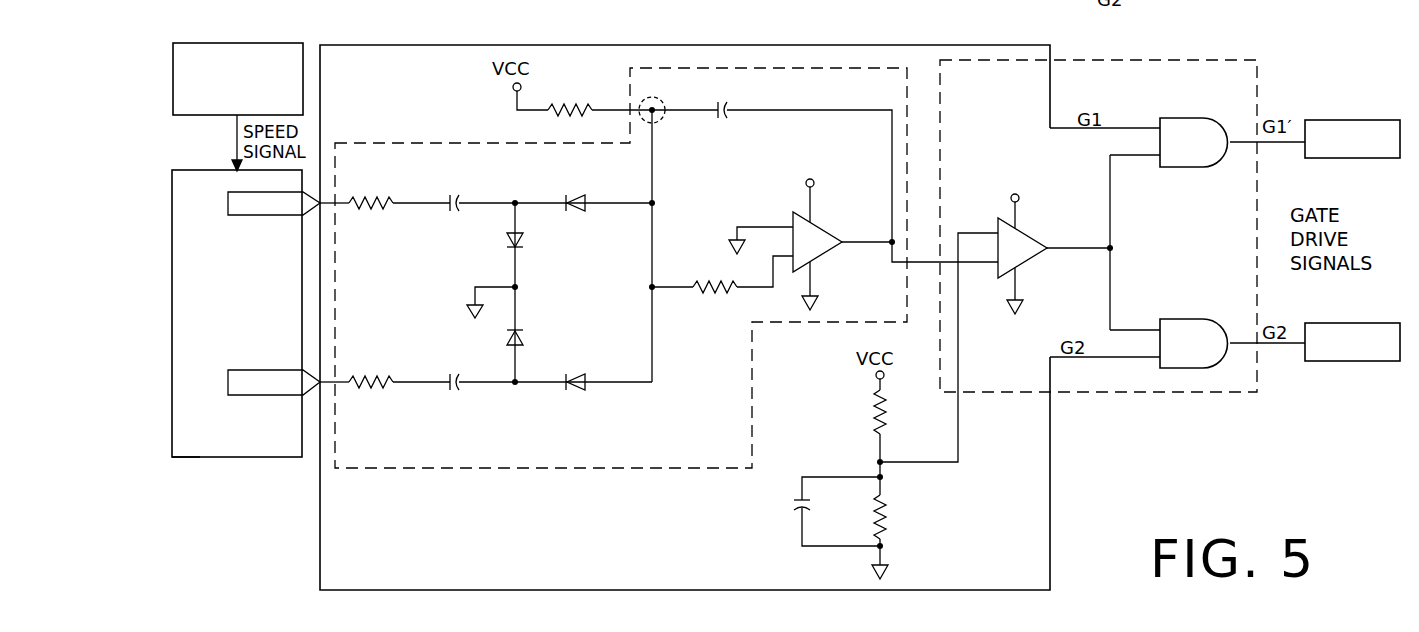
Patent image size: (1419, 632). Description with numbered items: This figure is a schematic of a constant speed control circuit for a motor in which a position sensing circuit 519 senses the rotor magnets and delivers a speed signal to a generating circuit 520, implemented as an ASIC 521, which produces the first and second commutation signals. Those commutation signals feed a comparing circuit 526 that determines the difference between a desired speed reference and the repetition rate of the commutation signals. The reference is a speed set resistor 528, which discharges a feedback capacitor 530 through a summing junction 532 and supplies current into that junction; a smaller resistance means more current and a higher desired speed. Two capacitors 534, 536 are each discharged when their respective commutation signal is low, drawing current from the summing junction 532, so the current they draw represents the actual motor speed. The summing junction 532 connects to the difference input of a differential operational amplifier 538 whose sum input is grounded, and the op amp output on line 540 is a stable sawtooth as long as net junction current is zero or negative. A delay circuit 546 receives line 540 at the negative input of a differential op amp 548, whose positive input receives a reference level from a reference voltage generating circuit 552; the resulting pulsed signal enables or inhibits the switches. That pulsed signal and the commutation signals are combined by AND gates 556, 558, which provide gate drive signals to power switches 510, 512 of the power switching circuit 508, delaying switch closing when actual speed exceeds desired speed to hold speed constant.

The power switching circuit 508 is at (1322, 98).
The power switch 510 is at (1348, 120).
The power switch 512 is at (1345, 362).
The position sensing circuit 519 is at (220, 43).
The generating circuit 520 is at (250, 468).
The ASIC 521 is at (190, 460).
The comparing circuit 526 is at (483, 470).
The speed set resistor 528 is at (551, 102).
The feedback capacitor 530 is at (738, 100).
The summing junction 532 is at (662, 122).
The capacitor 534 is at (463, 168).
The capacitor 536 is at (455, 392).
The differential operational amplifier 538 is at (822, 222).
The line 540 is at (920, 262).
The delay circuit 546 is at (1095, 392).
The differential op amp 548 is at (1030, 228).
The reference voltage generating circuit 552 is at (864, 526).
The AND gate 556 is at (1177, 142).
The AND gate 558 is at (1177, 343).